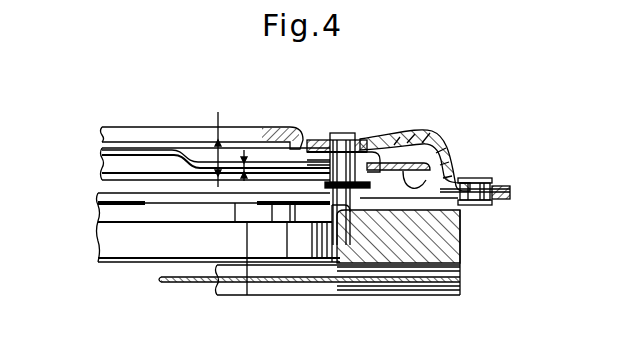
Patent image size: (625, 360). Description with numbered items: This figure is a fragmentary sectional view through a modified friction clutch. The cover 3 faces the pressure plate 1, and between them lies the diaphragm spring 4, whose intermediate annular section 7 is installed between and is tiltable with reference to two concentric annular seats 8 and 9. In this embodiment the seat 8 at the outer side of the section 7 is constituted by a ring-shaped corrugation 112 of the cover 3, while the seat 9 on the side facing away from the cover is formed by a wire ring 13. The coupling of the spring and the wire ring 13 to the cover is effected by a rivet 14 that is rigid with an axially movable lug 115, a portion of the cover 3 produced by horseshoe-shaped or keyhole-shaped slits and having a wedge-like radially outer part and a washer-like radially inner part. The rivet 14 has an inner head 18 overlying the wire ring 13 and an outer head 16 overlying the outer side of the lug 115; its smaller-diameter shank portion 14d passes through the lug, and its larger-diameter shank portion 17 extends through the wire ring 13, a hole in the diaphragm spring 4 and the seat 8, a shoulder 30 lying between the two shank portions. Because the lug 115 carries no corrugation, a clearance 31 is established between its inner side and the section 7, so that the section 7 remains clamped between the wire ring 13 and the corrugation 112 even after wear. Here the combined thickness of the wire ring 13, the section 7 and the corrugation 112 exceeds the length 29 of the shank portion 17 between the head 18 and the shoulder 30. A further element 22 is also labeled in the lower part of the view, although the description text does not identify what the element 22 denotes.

The pressure plate 1 is at (447, 243).
The cover 3 is at (365, 160).
The diaphragm spring 4 is at (233, 165).
The intermediate annular section 7 is at (395, 162).
The seat 8 is at (422, 131).
The ring-shaped corrugation 112 is at (423, 155).
The seat 9 is at (433, 207).
The wire ring 13 is at (501, 192).
The rivet 14 is at (327, 200).
The smaller-diameter shank portion 14d is at (350, 133).
The outer head 16 is at (357, 135).
The larger-diameter shank portion 17 is at (338, 195).
The inner head 18 is at (337, 205).
The bar 22 is at (365, 200).
The length 29 is at (258, 148).
The shoulder 30 is at (340, 133).
The clearance 31 is at (215, 152).
The lug 115 is at (328, 140).